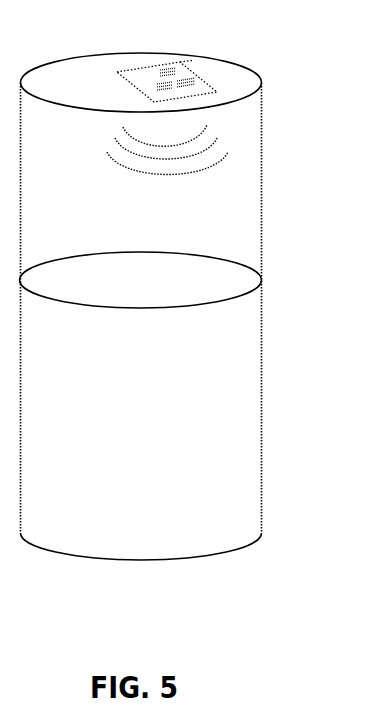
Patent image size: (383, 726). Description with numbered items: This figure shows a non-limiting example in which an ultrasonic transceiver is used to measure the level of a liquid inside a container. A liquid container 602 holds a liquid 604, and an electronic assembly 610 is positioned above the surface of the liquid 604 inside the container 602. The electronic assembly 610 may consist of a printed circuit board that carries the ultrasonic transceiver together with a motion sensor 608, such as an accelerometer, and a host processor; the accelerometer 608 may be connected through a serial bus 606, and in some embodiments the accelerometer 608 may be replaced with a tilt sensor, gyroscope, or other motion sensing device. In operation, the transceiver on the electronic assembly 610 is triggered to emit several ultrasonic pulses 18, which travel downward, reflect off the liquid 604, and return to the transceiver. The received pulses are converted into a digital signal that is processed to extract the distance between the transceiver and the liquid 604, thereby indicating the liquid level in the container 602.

The liquid container 602 is at (275, 173).
The liquid 604 is at (275, 273).
The serial bus 606 is at (206, 74).
The motion sensor 608 is at (146, 89).
The electronic assembly 610 is at (186, 53).
The ultrasonic pulses 18 is at (101, 162).